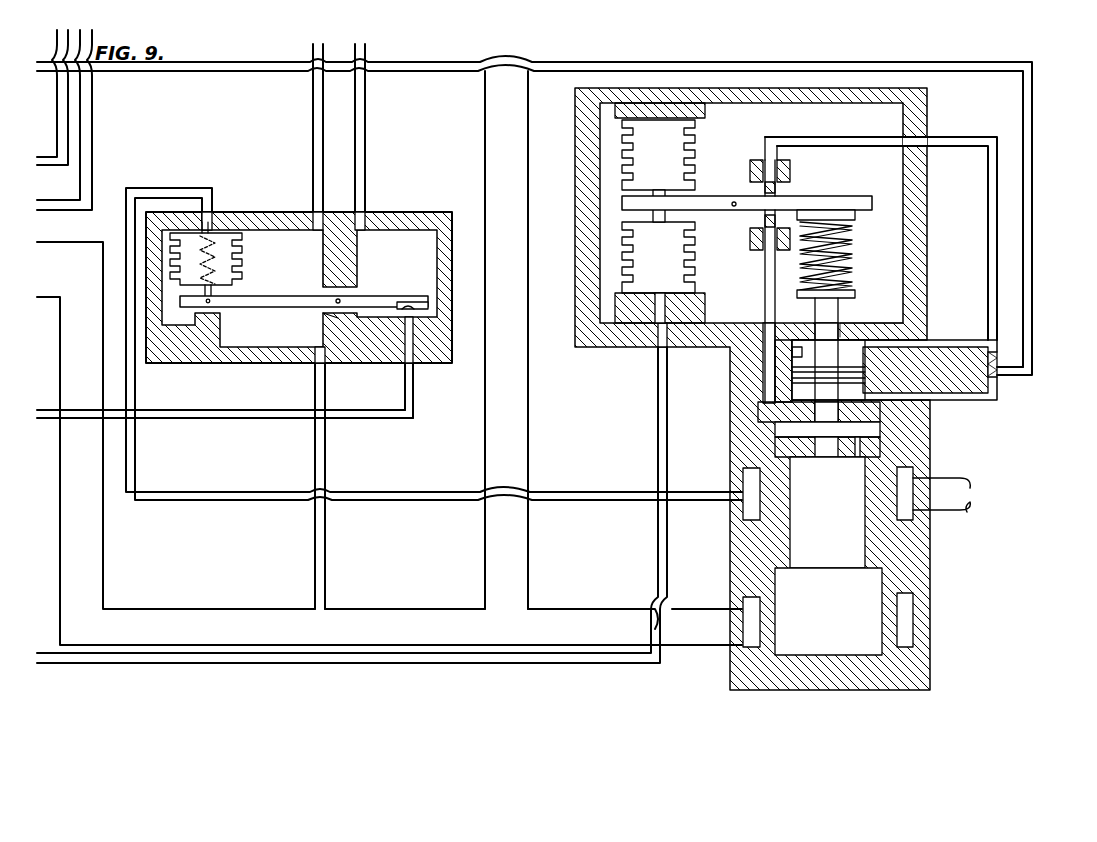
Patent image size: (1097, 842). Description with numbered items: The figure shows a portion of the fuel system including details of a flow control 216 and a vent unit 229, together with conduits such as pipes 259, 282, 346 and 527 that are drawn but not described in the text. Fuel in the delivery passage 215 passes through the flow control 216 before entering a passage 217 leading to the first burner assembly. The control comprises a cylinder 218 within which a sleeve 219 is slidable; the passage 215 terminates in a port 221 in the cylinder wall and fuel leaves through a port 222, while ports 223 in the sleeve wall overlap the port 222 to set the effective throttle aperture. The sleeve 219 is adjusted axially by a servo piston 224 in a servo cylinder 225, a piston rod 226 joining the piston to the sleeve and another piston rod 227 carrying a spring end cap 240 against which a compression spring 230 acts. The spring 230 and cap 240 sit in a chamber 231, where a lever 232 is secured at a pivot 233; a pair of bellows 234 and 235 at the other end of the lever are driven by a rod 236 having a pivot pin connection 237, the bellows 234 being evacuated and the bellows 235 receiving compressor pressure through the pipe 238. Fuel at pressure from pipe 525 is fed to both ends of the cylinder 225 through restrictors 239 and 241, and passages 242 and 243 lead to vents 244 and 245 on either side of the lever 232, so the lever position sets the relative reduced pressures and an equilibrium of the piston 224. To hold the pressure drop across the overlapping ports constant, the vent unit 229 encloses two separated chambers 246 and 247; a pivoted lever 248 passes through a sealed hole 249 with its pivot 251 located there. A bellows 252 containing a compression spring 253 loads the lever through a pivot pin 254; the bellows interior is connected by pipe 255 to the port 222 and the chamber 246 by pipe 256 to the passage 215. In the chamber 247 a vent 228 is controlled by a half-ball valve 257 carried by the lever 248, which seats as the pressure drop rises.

The delivery passage 215 is at (65, 252).
The flow control 216 is at (908, 564).
The passage 217 is at (947, 505).
The cylinder 218 is at (880, 588).
The sleeve 219 is at (870, 445).
The port 221 is at (770, 627).
The port 222 is at (905, 493).
The ports 223 is at (785, 510).
The servo piston 224 is at (905, 372).
The servo cylinder 225 is at (790, 350).
The piston rod 226 is at (893, 413).
The piston rod 227 is at (836, 307).
The vent 228 is at (410, 367).
The vent unit 229 is at (434, 208).
The compression spring 230 is at (855, 252).
The chamber 231 is at (892, 198).
The lever 232 is at (858, 200).
The pivot 233 is at (734, 202).
The bellows 234 is at (635, 138).
The bellows 235 is at (640, 250).
The rod 236 is at (650, 200).
The pivot pin connection 237 is at (655, 206).
The pipe 238 is at (668, 388).
The restrictor 239 is at (992, 392).
The spring end cap 240 is at (855, 292).
The restrictor 241 is at (986, 340).
The passage 242 is at (765, 398).
The passage 243 is at (987, 235).
The vent 244 is at (765, 222).
The vent 245 is at (776, 186).
The chamber 246 is at (306, 228).
The chamber 247 is at (375, 228).
The pivoted lever 248 is at (282, 296).
The sealed hole 249 is at (320, 317).
The pivot 251 is at (340, 300).
The bellows 252 is at (240, 246).
The compression spring 253 is at (205, 216).
The pivot pin 254 is at (210, 308).
The pipe 255 is at (128, 392).
The pipe 256 is at (318, 108).
The half-ball valve 257 is at (409, 302).
The conduit 259 is at (497, 101).
The conduit 282 is at (68, 102).
The conduit 346 is at (86, 128).
The pipe 525 is at (1024, 97).
The conduit 527 is at (180, 420).